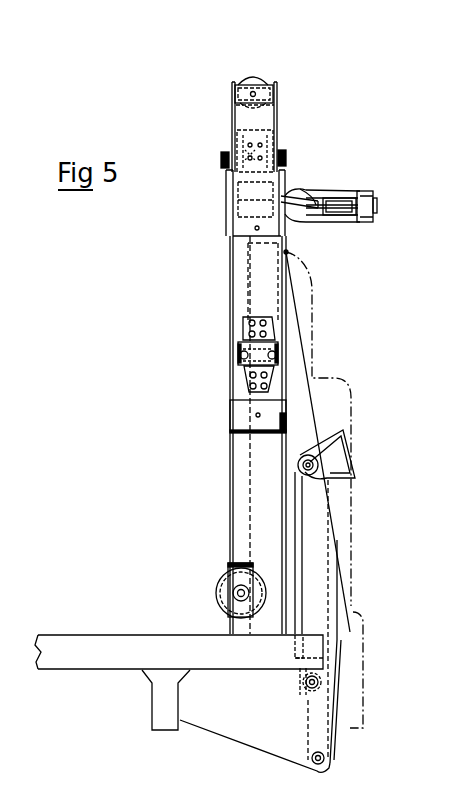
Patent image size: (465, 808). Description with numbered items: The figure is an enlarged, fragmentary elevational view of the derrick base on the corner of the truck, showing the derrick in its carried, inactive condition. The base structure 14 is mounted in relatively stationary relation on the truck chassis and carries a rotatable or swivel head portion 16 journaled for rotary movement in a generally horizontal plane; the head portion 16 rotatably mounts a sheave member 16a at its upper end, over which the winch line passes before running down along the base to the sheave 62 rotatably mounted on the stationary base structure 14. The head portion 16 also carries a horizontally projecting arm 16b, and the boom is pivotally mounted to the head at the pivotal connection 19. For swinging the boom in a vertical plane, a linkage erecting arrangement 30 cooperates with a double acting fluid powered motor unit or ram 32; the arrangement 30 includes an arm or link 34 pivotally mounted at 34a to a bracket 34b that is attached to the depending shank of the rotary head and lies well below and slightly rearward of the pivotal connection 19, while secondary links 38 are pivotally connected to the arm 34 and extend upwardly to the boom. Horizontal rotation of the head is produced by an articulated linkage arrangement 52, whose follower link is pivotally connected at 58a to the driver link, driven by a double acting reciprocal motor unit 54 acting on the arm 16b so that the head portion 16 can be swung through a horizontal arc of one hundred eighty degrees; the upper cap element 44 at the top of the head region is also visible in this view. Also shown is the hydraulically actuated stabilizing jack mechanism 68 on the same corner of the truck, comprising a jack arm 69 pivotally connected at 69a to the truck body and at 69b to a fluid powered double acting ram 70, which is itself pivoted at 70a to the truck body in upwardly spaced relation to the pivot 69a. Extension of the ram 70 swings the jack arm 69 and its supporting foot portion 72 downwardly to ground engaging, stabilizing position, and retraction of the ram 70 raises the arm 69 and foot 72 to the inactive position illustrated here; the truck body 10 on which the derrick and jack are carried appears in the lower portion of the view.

The deck 10 is at (109, 670).
The base structure 14 is at (231, 468).
The rotatable head portion 16 is at (230, 200).
The sheave member 16a is at (279, 138).
The horizontally projecting arm 16b is at (303, 200).
The pivotal connection 19 is at (223, 164).
The linkage erecting arrangement 30 is at (264, 269).
The reciprocal fluid powered motor unit 32 is at (263, 78).
The arm or link 34 is at (272, 122).
The pivotal mounting 34a is at (240, 356).
The bracket 34b is at (241, 338).
The secondary arms or links 38 is at (234, 150).
The cap block 44 is at (274, 89).
The articulated linkage arrangement 52 is at (375, 193).
The reciprocal motor unit 54 is at (294, 191).
The pivotal connection 58a is at (360, 192).
The sheave 62 is at (218, 583).
The stabilizing jack mechanism 68 is at (337, 577).
The jack arm 69 is at (323, 609).
The pivotal connection 69a is at (325, 760).
The pivotal connection 69b is at (318, 462).
The fluid powered double acting ram 70 is at (297, 500).
The pivot 70a is at (307, 683).
The supporting foot portion 72 is at (341, 470).